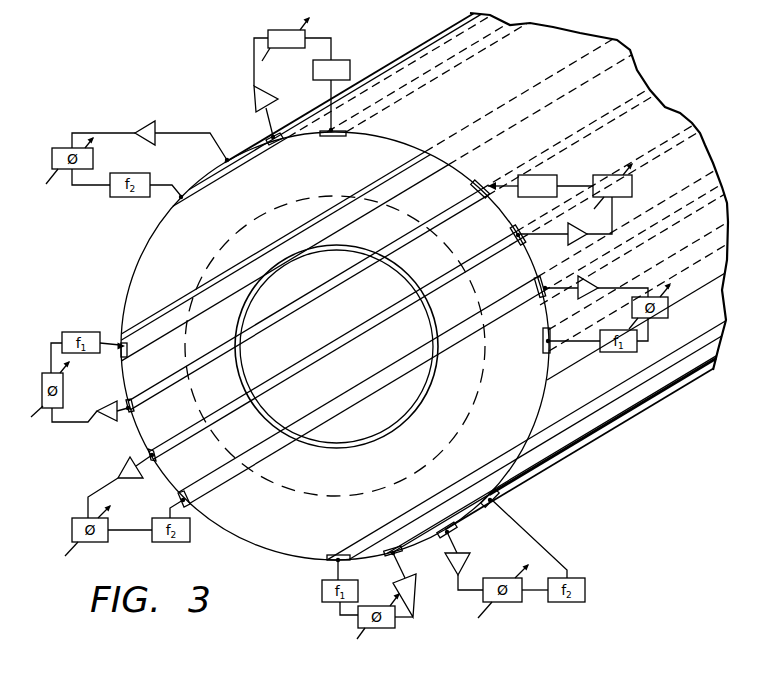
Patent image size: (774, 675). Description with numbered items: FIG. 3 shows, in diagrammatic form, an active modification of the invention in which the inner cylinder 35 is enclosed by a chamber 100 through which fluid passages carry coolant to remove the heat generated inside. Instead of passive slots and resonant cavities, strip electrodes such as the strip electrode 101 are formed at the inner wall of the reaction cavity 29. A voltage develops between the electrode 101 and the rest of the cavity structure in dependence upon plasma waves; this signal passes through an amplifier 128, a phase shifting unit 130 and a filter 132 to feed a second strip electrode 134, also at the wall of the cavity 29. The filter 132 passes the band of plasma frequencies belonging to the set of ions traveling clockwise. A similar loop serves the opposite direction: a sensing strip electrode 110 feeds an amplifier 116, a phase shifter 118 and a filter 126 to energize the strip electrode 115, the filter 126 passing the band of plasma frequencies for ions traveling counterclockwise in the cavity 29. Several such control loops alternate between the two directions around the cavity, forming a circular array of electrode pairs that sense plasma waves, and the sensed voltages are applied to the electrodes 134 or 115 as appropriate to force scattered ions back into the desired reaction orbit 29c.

The chamber 100 is at (399, 286).
The reaction cavity 29 is at (292, 520).
The reaction orbit 29c is at (335, 346).
The inner cylinder 35 is at (507, 333).
The strip electrode 101 is at (275, 144).
The electrode strip 110 is at (502, 250).
The strip electrode 115 is at (468, 207).
The amplifier 116 is at (560, 244).
The phase shifter 118 is at (638, 186).
The filter 126 is at (530, 161).
The amplifier 128 is at (242, 93).
The phase shifting unit 130 is at (310, 32).
The filter 132 is at (353, 56).
The strip electrode 134 is at (421, 97).